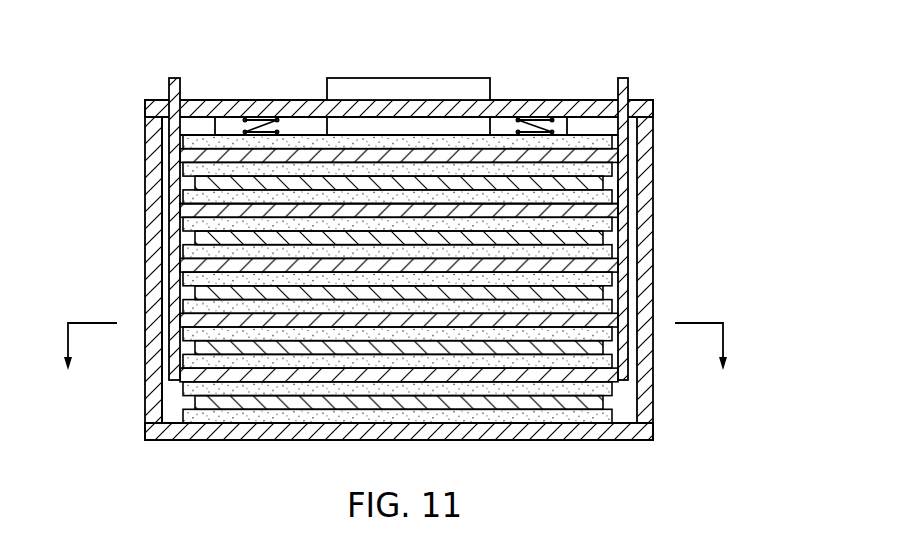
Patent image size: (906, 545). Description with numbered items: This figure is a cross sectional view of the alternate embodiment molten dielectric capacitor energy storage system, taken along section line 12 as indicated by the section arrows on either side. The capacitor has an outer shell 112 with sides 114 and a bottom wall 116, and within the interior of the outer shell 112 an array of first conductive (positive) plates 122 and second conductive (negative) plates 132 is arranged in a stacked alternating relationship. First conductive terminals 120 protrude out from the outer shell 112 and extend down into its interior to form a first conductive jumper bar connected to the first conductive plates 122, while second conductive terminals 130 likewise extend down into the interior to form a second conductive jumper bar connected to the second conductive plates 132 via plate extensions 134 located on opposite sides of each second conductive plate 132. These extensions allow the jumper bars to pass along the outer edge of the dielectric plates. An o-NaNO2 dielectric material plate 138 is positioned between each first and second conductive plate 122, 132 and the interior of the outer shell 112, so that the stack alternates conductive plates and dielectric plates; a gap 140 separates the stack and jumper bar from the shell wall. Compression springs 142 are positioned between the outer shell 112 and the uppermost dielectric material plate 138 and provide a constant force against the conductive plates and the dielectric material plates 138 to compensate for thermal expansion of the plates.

The section line 12 is at (397, 366).
The outer shell 112 is at (257, 100).
The sides 114 is at (653, 130).
The housing bottom wall 116 is at (568, 442).
The first conductive terminal 120 is at (175, 78).
The first conductive plate 122 is at (197, 400).
The second conductive terminal 130 is at (412, 78).
The second conductive plate 132 is at (196, 213).
The plate extension 134 is at (628, 205).
The dielectric material plate 138 is at (506, 130).
The insulating gap 140 is at (163, 252).
The compression spring 142 is at (524, 122).